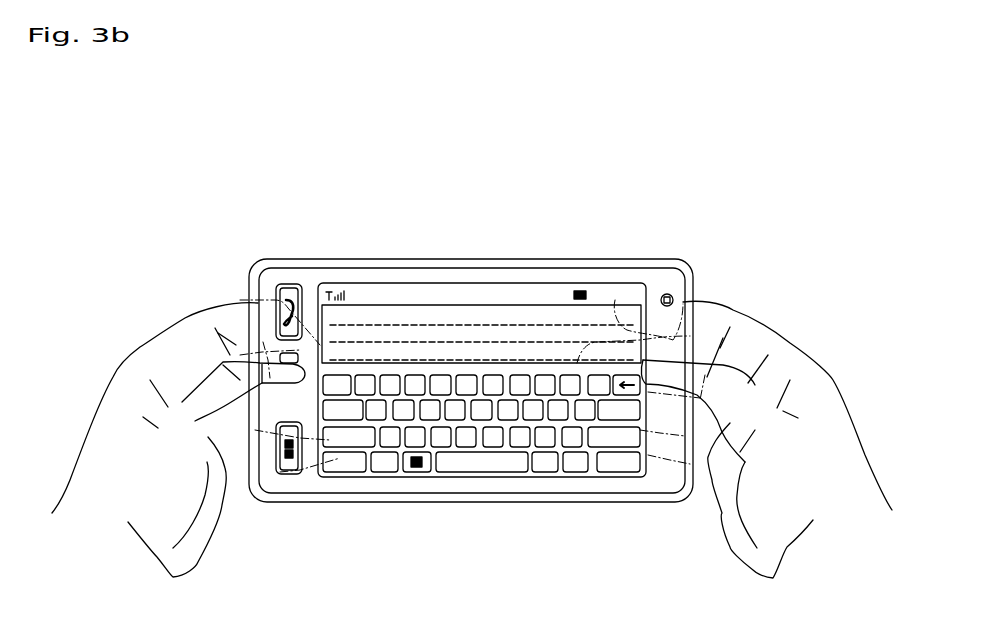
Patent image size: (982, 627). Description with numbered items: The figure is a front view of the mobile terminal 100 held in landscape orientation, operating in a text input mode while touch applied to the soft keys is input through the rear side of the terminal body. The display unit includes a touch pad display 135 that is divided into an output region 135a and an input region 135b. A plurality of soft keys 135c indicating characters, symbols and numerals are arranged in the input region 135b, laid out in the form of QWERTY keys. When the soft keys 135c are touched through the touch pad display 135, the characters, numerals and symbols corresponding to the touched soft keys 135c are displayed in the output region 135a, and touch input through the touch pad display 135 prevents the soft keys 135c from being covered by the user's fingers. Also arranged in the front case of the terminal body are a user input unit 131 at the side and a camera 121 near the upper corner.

The mobile terminal 100 is at (225, 175).
The user input unit 131 is at (287, 290).
The touch pad display 135 is at (510, 284).
The output region 135a is at (417, 350).
The input region 135b is at (419, 473).
The soft keys 135c is at (502, 417).
The camera 121 is at (667, 293).